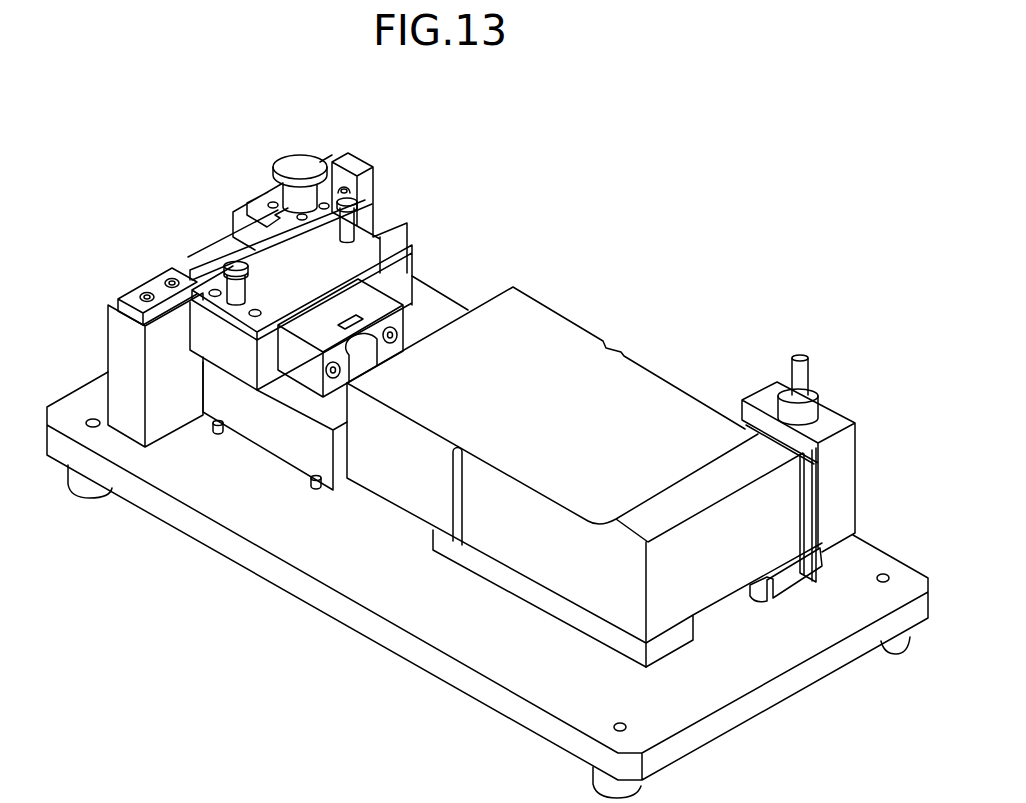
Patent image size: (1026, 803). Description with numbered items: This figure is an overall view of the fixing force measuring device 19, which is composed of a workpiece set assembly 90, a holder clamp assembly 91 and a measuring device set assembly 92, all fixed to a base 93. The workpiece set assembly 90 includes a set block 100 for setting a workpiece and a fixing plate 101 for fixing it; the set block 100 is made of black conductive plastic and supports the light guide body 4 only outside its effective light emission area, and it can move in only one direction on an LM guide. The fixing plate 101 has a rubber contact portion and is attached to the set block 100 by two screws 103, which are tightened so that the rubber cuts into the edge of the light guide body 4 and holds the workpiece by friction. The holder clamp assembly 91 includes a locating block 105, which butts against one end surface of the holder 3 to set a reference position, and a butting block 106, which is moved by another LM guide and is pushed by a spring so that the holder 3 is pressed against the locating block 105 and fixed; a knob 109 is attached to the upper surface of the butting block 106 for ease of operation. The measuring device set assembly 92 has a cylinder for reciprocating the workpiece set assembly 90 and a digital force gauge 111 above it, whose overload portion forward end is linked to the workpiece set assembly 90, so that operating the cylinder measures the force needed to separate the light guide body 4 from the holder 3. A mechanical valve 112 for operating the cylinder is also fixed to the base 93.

The fixing force measuring device 19 is at (651, 214).
The holder 3 is at (238, 208).
The light guide body 4 is at (377, 250).
The workpiece set assembly 90 is at (500, 254).
The holder clamp assembly 91 is at (336, 160).
The measuring device set assembly 92 is at (892, 364).
The base 93 is at (417, 653).
The set block 100 is at (207, 340).
The fixing plate 101 is at (210, 228).
The screws 103 is at (230, 277).
The locating block 105 is at (133, 310).
The butting block 106 is at (273, 195).
The knob 109 is at (308, 166).
The digital force gauge 111 is at (603, 342).
The mechanical valve 112 is at (820, 387).